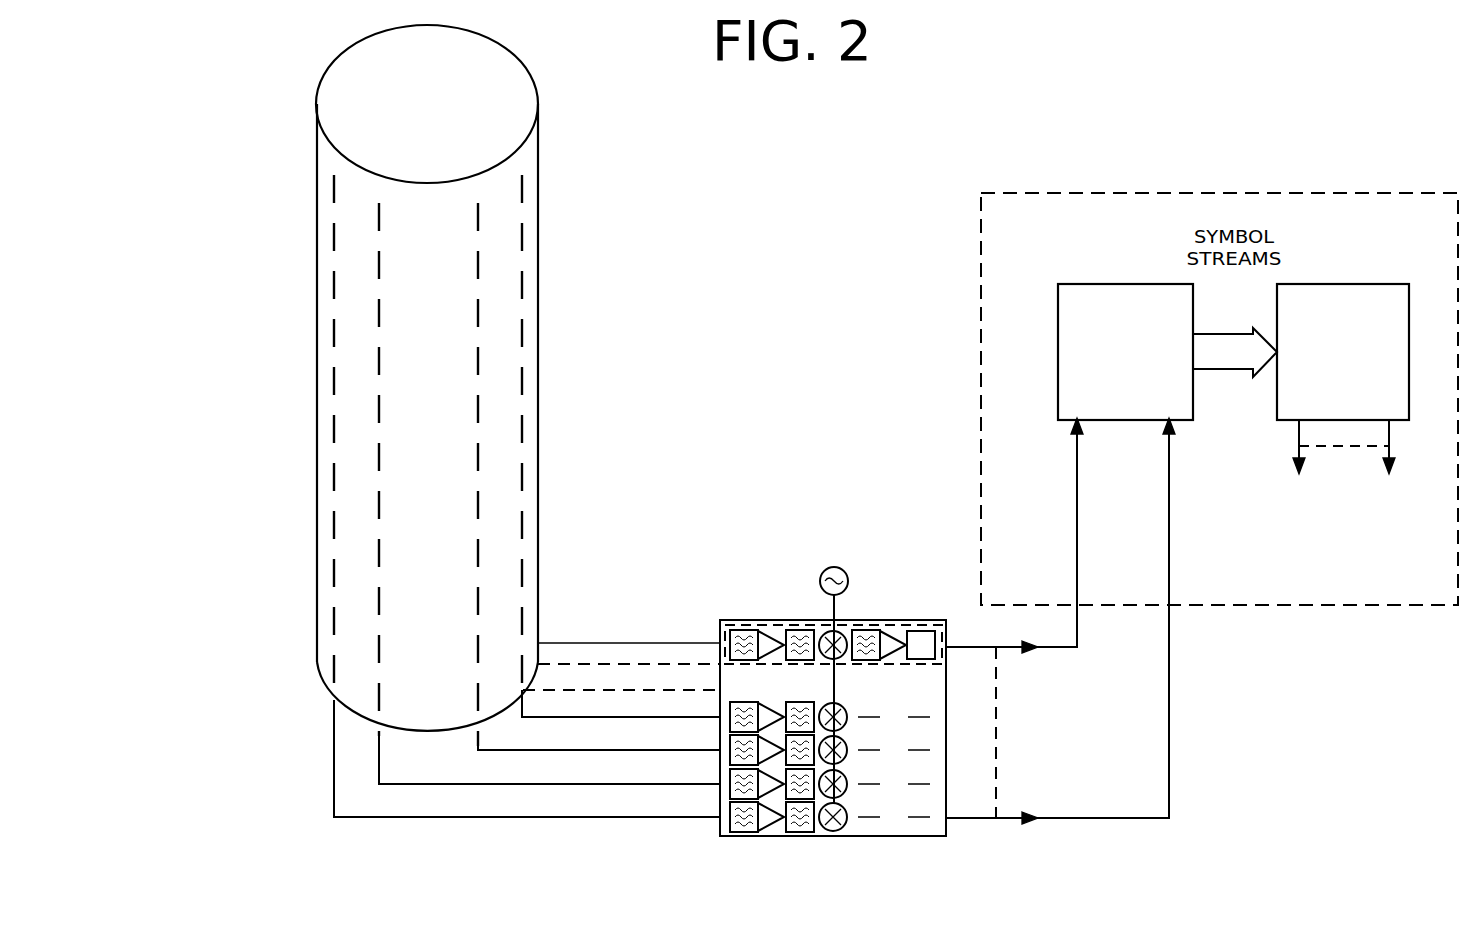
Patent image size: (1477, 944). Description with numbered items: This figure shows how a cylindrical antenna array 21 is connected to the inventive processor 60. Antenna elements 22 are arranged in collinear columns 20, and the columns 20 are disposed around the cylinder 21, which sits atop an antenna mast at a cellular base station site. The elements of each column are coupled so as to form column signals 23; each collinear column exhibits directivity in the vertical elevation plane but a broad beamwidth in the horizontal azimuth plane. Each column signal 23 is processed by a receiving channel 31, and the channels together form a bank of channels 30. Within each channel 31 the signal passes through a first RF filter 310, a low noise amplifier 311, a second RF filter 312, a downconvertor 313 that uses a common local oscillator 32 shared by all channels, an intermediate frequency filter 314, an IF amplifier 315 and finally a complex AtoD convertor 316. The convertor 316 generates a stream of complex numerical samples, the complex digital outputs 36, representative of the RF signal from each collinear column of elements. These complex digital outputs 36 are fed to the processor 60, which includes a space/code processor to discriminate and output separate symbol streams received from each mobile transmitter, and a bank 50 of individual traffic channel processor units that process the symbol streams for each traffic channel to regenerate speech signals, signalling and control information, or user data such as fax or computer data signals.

The collinear columns 20 is at (323, 655).
The cylindrical antenna array 21 is at (317, 98).
The antenna elements 22 is at (381, 289).
The column signals 23 is at (622, 642).
The bank of channels 30 is at (720, 625).
The receiving channel 31 is at (745, 630).
The local oscillator 32 is at (834, 567).
The complex digital outputs 36 is at (1090, 810).
The bank of individual traffic channel processor units 50 is at (1355, 284).
The inventive processor 60 is at (1157, 192).
The first RF filter 310 is at (741, 661).
The low noise amplifier 311 is at (770, 655).
The second RF filter 312 is at (797, 629).
The downconvertor 313 is at (841, 657).
The Intermediate Frequency (IF) filter 314 is at (873, 629).
The IF amplifier 315 is at (893, 655).
The complex AtoD convertor 316 is at (933, 630).